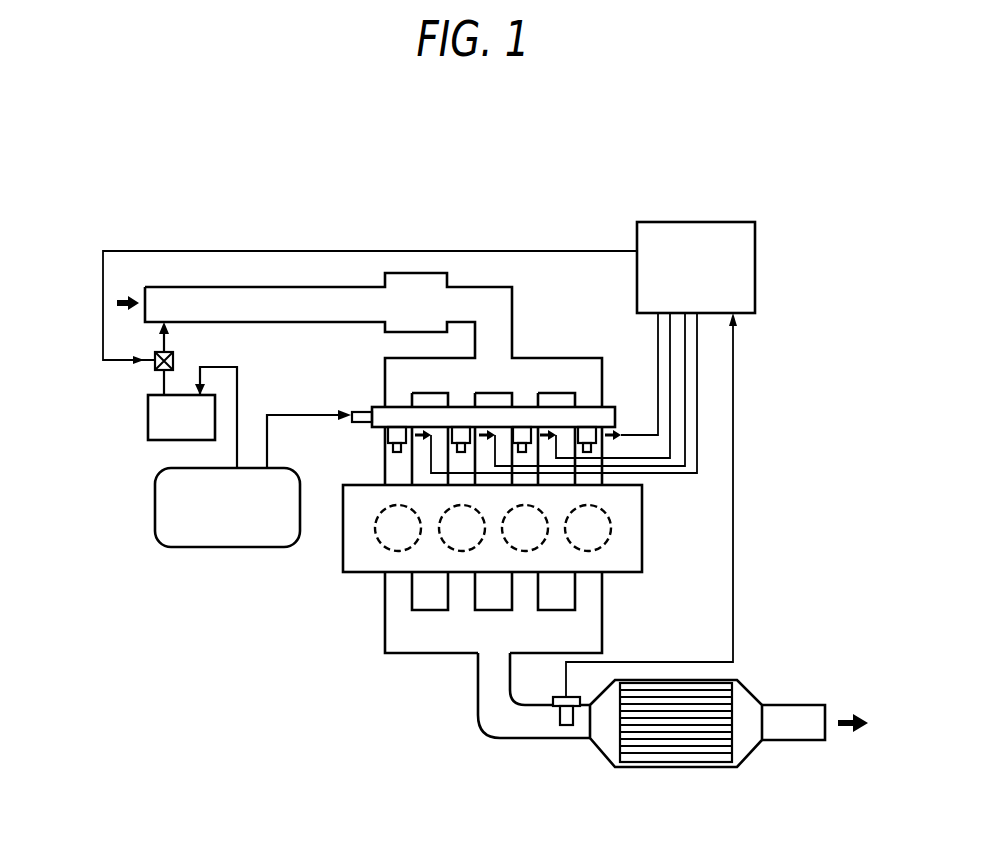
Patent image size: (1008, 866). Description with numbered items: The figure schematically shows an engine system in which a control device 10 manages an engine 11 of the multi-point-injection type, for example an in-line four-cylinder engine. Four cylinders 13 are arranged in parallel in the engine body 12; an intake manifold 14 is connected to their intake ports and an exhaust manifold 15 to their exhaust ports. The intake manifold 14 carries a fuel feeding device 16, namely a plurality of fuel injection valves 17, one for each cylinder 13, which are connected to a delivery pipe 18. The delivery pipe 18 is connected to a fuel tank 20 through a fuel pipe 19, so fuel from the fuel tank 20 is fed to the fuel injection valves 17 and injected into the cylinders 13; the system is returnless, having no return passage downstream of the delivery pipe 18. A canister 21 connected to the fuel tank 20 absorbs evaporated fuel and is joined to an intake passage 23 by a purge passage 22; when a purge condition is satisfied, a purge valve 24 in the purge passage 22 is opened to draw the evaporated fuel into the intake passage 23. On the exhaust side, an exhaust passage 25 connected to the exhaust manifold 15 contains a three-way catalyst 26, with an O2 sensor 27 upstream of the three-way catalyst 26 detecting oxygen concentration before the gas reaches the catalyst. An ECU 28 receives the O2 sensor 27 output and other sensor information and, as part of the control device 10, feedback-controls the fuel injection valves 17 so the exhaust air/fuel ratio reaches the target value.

The control device 10 is at (852, 209).
The engine 11 is at (330, 647).
The engine body 12 is at (352, 548).
The cylinders 13 is at (600, 527).
The intake manifold 14 is at (562, 377).
The exhaust manifold 15 is at (417, 625).
The fuel feeding device 16 is at (346, 401).
The fuel injection valves 17 is at (382, 438).
The delivery pipe 18 is at (600, 413).
The fuel pipe 19 is at (290, 416).
The fuel tank 20 is at (188, 526).
The canister 21 is at (168, 418).
The purge passage 22 is at (158, 379).
The intake passage 23 is at (291, 303).
The purge valve 24 is at (176, 362).
The exhaust passage 25 is at (512, 728).
The three-way catalyst 26 is at (683, 762).
The O2 sensor 27 is at (564, 727).
The ECU 28 is at (737, 222).